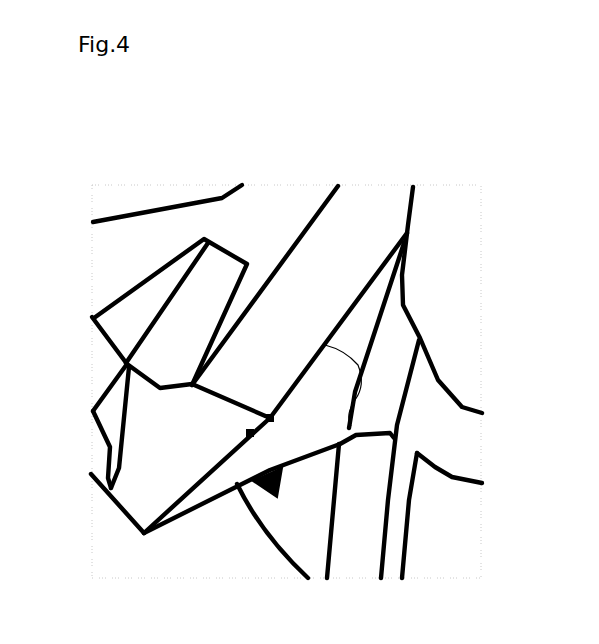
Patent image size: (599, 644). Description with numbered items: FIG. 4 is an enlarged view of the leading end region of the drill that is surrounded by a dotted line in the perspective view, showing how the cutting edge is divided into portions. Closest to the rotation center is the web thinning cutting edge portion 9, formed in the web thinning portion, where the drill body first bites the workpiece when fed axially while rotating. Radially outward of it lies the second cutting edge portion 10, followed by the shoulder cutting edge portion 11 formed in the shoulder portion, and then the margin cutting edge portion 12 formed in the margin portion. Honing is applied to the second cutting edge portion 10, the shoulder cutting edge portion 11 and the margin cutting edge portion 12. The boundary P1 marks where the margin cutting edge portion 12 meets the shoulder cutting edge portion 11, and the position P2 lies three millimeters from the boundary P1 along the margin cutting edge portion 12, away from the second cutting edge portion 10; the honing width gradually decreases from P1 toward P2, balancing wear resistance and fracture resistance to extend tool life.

The web thinning cutting edge portion 9 is at (402, 193).
The second cutting edge portion 10 is at (431, 459).
The shoulder cutting edge portion 11 is at (272, 420).
The margin cutting edge portion 12 is at (205, 485).
The boundary P1 is at (268, 415).
The position P2 is at (247, 432).